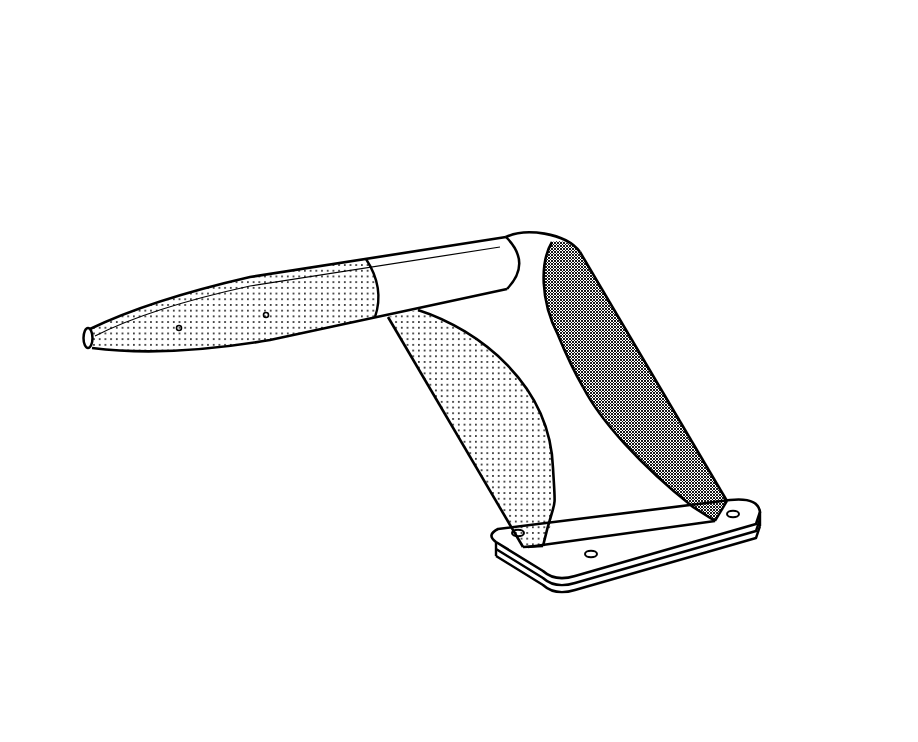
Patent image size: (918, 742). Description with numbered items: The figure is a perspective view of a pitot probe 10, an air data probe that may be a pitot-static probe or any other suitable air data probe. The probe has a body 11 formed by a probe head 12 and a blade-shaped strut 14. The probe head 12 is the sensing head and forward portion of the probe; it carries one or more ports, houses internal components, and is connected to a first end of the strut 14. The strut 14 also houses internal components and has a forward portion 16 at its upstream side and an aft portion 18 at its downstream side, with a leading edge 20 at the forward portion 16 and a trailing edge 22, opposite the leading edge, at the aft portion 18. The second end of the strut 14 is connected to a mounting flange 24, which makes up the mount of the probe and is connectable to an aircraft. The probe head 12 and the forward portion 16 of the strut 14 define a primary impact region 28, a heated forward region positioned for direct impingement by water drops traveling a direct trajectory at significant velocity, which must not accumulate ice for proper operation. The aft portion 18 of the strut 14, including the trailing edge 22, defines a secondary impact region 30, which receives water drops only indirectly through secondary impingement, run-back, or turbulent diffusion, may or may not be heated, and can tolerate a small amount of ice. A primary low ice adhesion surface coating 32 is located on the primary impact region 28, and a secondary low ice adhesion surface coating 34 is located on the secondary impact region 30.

The pitot probe 10 is at (128, 110).
The body 11 is at (213, 402).
The probe head 12 is at (273, 336).
The strut 14 is at (517, 320).
The forward portion 16 is at (456, 428).
The aft portion 18 is at (607, 353).
The leading edge 20 is at (487, 463).
The trailing edge 22 is at (641, 376).
The mounting flange 24 is at (677, 535).
The primary impact region 28 is at (218, 305).
The secondary impact region 30 is at (583, 340).
The primary low ice adhesion surface coating 32 is at (198, 335).
The secondary low ice adhesion surface coating 34 is at (667, 445).